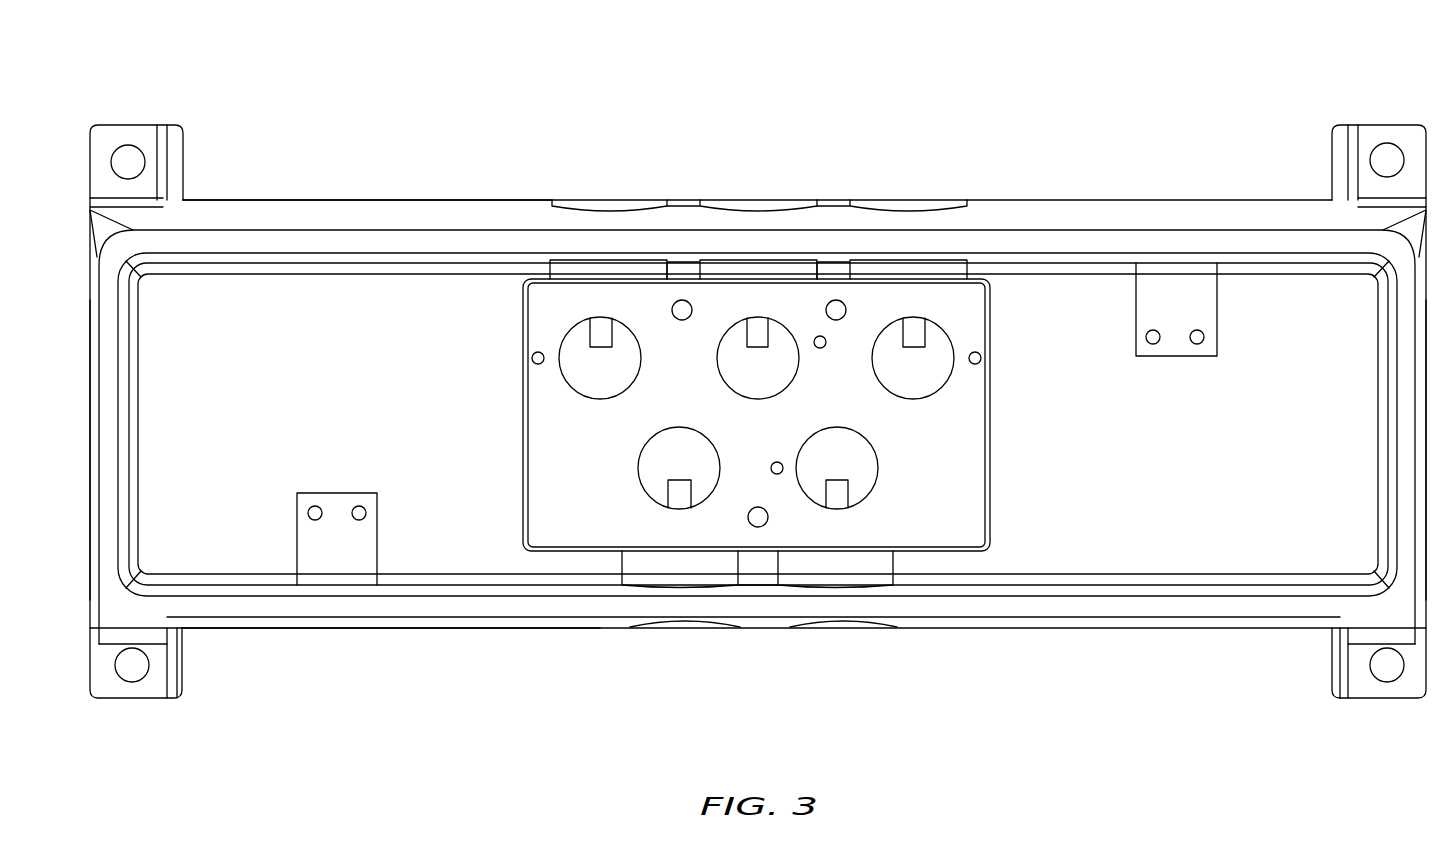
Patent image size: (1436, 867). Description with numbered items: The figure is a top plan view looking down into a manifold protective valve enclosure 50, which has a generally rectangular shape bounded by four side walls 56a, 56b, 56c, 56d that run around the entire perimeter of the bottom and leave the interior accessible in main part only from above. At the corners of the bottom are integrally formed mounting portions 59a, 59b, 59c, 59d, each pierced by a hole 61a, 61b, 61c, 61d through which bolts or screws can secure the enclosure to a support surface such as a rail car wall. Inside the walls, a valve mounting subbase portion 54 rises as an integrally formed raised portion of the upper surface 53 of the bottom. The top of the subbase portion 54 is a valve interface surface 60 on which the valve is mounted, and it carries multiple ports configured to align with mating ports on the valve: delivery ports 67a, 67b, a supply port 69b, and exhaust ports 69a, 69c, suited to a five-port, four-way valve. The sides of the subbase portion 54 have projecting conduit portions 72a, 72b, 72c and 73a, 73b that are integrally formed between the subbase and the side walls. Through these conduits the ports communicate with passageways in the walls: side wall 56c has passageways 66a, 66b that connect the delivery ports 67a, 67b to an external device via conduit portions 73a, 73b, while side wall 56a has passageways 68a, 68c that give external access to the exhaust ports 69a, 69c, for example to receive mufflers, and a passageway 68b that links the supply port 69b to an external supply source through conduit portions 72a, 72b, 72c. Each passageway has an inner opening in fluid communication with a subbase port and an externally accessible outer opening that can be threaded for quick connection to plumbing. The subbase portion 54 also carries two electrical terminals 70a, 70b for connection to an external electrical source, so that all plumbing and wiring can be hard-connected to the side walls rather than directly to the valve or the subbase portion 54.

The manifold protective valve enclosure 50 is at (750, 61).
The upper surface 53 is at (1252, 305).
The valve mounting subbase portion 54 is at (523, 400).
The side wall 56a is at (410, 240).
The side wall 56b is at (1397, 480).
The side wall 56c is at (392, 600).
The side wall 56d is at (110, 407).
The mounting portion 59a is at (135, 700).
The mounting portion 59b is at (1388, 700).
The mounting portion 59c is at (1380, 125).
The mounting portion 59d is at (128, 125).
The valve interface surface 60 is at (967, 522).
The hole 61a is at (132, 665).
The hole 61b is at (1387, 665).
The hole 61c is at (1387, 160).
The hole 61d is at (128, 162).
The passageway 66a is at (680, 623).
The passageway 66b is at (840, 630).
The delivery port 67a is at (653, 459).
The delivery port 67b is at (868, 461).
The passageway 68a is at (603, 200).
The passageway 68b is at (757, 200).
The passageway 68c is at (910, 200).
The exhaust port 69a is at (573, 350).
The supply port 69b is at (782, 372).
The exhaust port 69c is at (940, 342).
The electrical terminal 70a is at (297, 537).
The electrical terminal 70b is at (1172, 357).
The conduit portion 72a is at (615, 272).
The conduit portion 72b is at (757, 267).
The conduit portion 72c is at (930, 268).
The conduit portion 73a is at (650, 577).
The conduit portion 73b is at (868, 568).